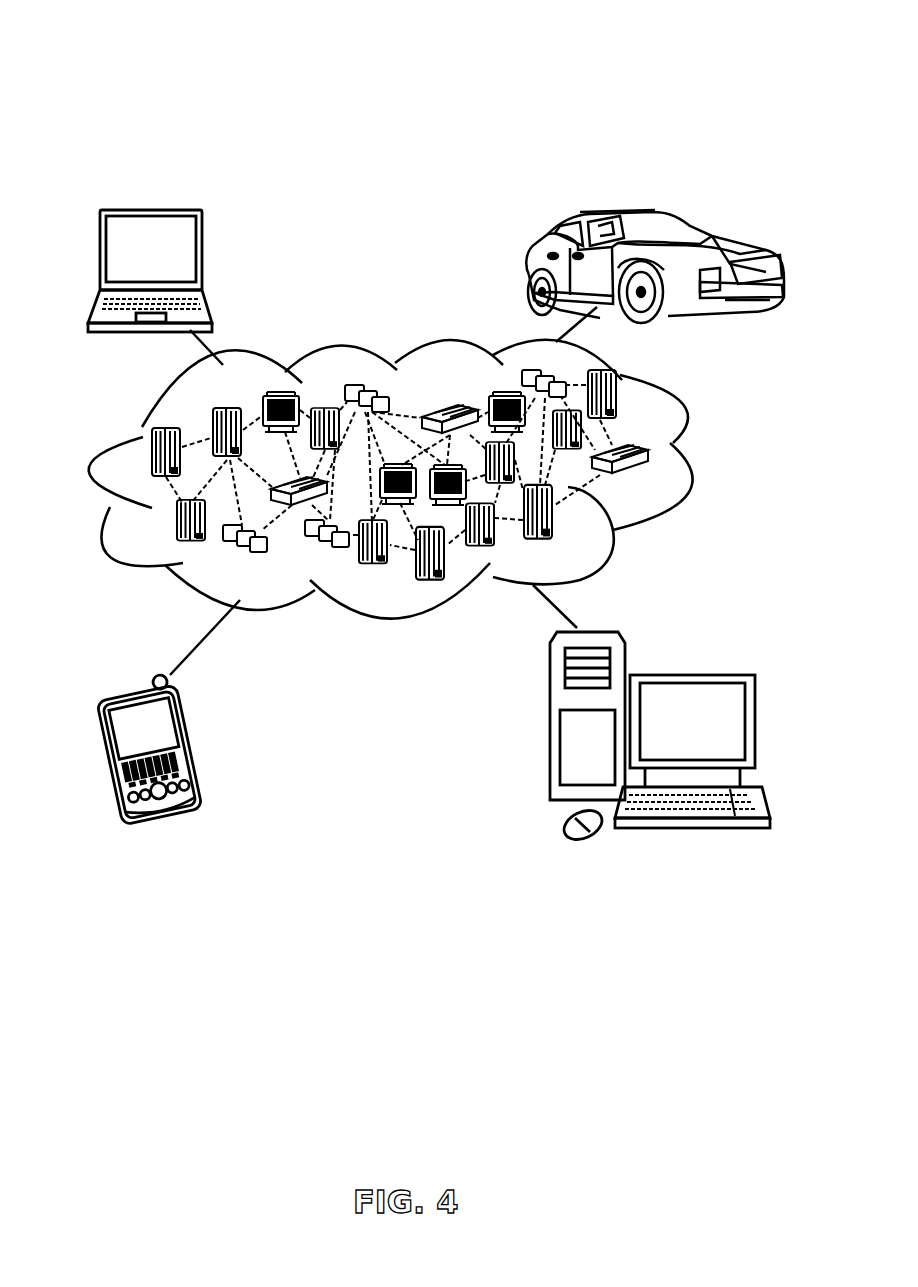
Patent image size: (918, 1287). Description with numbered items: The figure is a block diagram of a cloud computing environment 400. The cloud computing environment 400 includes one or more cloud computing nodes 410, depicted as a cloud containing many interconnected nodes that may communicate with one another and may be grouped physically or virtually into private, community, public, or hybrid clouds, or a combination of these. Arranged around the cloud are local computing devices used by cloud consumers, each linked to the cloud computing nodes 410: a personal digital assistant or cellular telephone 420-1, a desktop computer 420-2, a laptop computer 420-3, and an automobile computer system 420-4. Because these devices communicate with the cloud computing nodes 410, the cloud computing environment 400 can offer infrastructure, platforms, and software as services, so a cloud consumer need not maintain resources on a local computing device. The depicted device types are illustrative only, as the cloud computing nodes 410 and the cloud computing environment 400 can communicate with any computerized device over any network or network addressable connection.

The cloud computing environment 400 is at (330, 70).
The cloud computing nodes 410 is at (658, 488).
The personal digital assistant (PDA) or cellular telephone 420-1 is at (194, 742).
The desktop computer 420-2 is at (690, 675).
The laptop computer 420-3 is at (204, 255).
The automobile computer system 420-4 is at (527, 266).